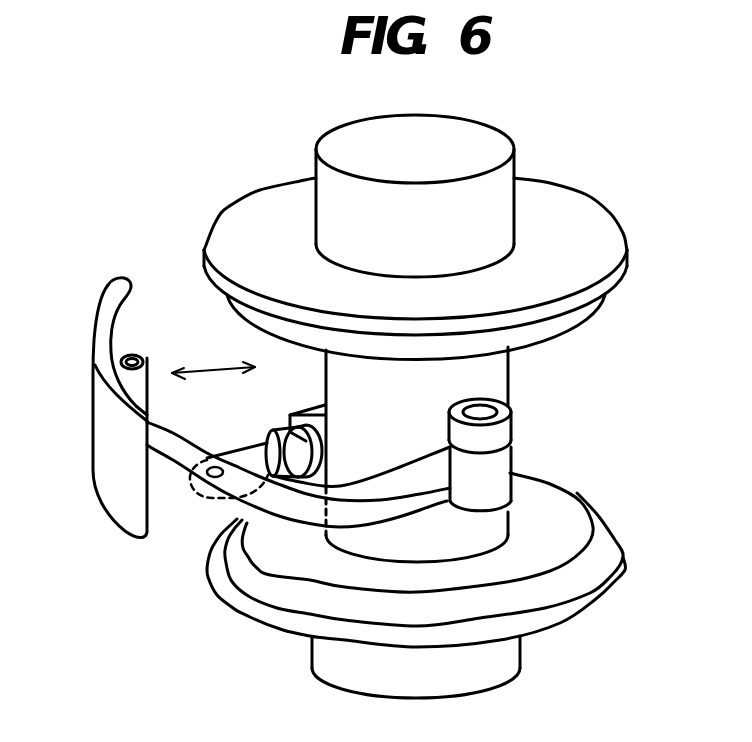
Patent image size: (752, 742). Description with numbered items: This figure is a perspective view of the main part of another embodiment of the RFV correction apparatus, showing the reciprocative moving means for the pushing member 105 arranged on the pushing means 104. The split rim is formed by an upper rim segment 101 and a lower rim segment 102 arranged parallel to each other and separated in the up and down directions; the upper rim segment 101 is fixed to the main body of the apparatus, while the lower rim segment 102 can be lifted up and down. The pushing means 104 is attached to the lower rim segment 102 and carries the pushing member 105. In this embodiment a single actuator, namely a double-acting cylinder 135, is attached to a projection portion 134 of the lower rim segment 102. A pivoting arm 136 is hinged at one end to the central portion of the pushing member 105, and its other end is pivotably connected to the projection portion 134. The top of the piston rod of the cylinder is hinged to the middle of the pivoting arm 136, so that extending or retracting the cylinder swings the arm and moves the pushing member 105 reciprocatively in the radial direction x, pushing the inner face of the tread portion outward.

The upper rim segment 101 is at (573, 212).
The lower rim segment 102 is at (542, 517).
The pushing means 104 is at (270, 421).
The pushing member 105 is at (107, 413).
The projection portion 134 is at (487, 375).
The double-acting cylinder 135 is at (313, 413).
The pivoting arm 136 is at (290, 493).